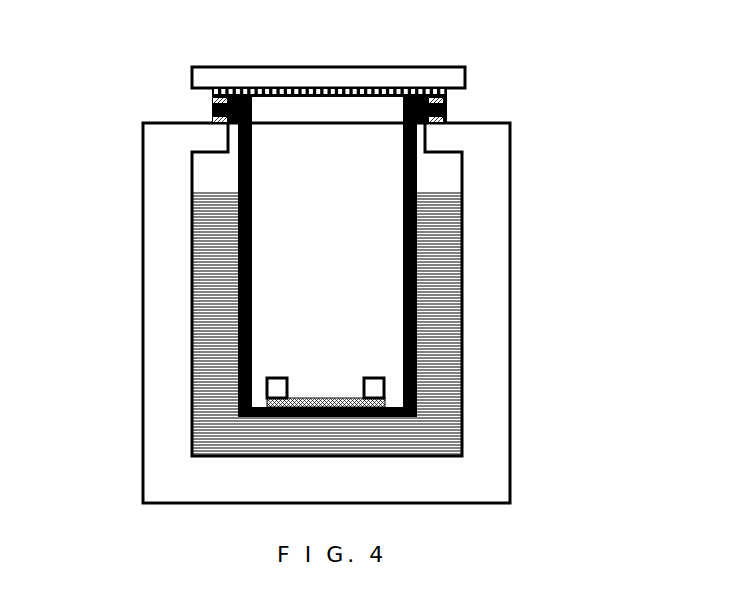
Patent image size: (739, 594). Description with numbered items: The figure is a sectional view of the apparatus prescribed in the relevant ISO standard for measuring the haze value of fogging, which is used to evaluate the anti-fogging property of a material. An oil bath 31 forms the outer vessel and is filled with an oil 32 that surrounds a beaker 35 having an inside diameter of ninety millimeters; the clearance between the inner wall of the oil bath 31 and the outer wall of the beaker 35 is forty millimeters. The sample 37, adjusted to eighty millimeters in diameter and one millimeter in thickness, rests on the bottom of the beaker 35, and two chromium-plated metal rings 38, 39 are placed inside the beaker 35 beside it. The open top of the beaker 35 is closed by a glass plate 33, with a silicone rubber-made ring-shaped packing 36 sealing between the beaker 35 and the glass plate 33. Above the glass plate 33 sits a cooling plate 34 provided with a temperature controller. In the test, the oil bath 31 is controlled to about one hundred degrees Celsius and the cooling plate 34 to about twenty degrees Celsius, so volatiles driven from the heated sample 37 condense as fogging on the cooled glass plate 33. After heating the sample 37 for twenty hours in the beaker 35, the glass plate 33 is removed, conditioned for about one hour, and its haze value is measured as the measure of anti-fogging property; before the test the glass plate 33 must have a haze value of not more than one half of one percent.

The oil bath 31 is at (478, 485).
The oil 32 is at (441, 323).
The glass plate 33 is at (337, 105).
The cooling plate 34 is at (215, 77).
The beaker 35 is at (230, 179).
The ring-shaped packing 36 is at (455, 103).
The sample 37 is at (326, 389).
The chromium-plated metal ring 38 is at (277, 369).
The chromium-plated metal ring 39 is at (375, 369).